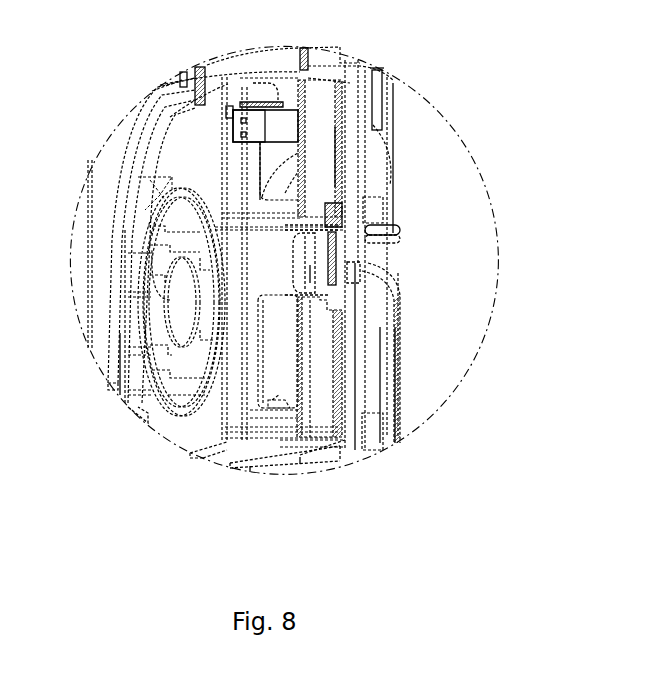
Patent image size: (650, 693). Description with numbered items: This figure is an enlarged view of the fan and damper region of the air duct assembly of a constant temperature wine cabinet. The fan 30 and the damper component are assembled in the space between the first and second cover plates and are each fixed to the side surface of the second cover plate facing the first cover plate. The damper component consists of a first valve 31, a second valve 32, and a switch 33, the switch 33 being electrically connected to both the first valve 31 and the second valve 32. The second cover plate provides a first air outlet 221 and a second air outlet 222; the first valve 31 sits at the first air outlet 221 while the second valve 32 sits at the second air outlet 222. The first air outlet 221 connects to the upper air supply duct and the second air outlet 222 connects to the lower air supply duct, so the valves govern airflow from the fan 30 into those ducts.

The fan 30 is at (153, 222).
The first air outlet 221 is at (283, 101).
The second air outlet 222 is at (268, 389).
The first valve 31 is at (321, 120).
The second valve 32 is at (322, 335).
The switch 33 is at (300, 264).